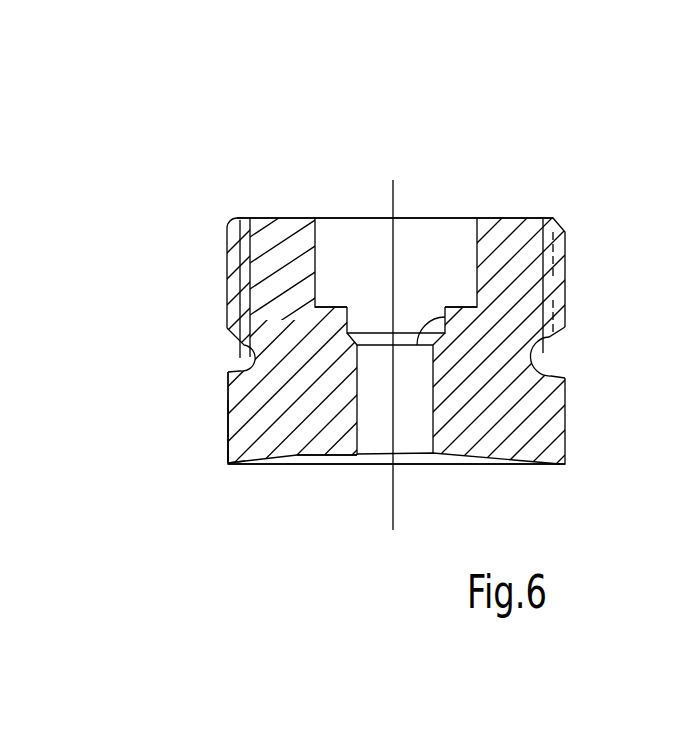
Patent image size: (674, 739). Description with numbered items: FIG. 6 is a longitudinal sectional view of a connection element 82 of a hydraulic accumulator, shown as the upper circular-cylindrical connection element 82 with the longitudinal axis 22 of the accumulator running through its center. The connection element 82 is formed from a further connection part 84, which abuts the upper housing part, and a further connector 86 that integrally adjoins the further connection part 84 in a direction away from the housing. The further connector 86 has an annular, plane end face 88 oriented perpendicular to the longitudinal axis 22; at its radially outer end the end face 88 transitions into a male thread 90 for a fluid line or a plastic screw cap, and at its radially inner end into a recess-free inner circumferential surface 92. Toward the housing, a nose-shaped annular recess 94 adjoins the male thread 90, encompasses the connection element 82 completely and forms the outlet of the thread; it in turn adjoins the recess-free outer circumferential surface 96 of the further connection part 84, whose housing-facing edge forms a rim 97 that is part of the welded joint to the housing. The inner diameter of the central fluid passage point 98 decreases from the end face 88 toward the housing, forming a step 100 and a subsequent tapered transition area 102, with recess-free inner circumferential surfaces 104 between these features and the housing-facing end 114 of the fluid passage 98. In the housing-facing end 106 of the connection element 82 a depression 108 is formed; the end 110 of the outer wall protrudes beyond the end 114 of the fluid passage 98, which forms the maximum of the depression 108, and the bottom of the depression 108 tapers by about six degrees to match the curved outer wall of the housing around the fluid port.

The connection element 82 is at (545, 131).
The further connection part 84 is at (523, 437).
The further connector 86 is at (262, 245).
The end face 88 is at (515, 219).
The male thread 90 is at (250, 263).
The inner circumferential surface 92 is at (318, 250).
The nose-shaped annular recess 94 is at (551, 363).
The outer circumferential surface 96 is at (228, 398).
The rim 97 is at (223, 460).
The fluid passage point 98 is at (444, 291).
The step 100 is at (315, 300).
The tapered transition area 102 is at (357, 342).
The inner circumferential surface 104 is at (414, 346).
The end 106 is at (232, 517).
The depression 108 is at (303, 458).
The end 110 is at (228, 460).
The end 114 is at (358, 453).
The longitudinal axis 22 is at (387, 507).